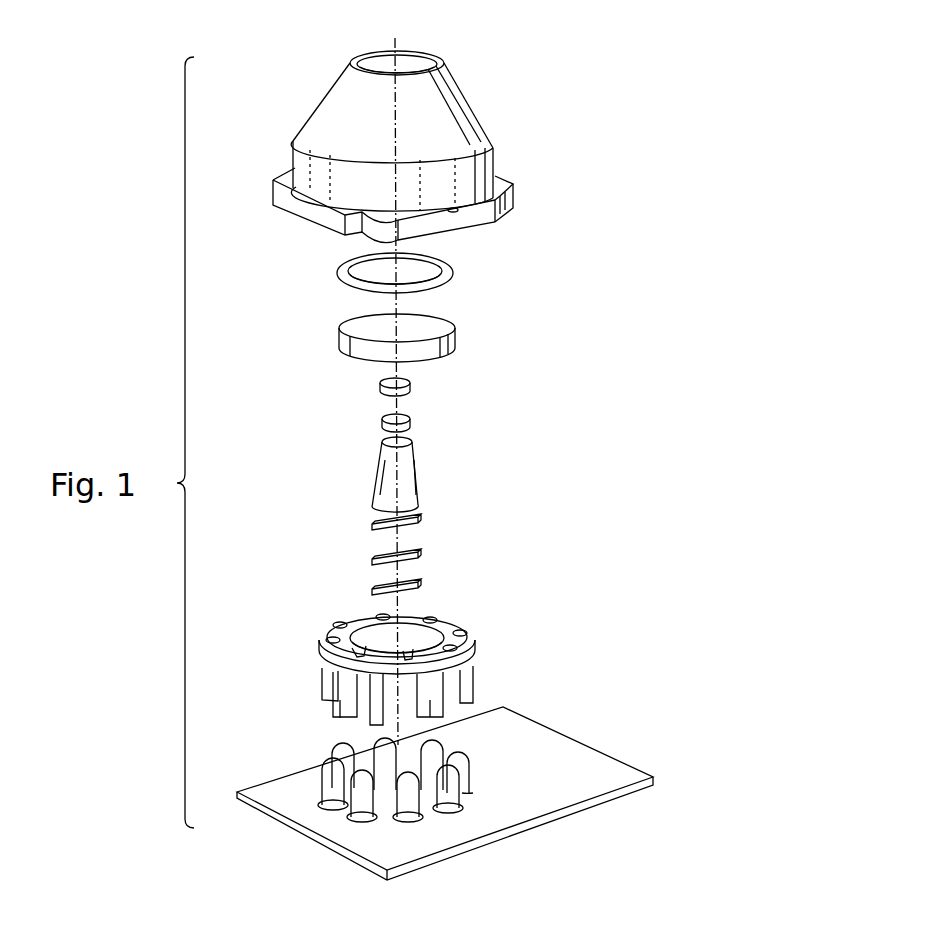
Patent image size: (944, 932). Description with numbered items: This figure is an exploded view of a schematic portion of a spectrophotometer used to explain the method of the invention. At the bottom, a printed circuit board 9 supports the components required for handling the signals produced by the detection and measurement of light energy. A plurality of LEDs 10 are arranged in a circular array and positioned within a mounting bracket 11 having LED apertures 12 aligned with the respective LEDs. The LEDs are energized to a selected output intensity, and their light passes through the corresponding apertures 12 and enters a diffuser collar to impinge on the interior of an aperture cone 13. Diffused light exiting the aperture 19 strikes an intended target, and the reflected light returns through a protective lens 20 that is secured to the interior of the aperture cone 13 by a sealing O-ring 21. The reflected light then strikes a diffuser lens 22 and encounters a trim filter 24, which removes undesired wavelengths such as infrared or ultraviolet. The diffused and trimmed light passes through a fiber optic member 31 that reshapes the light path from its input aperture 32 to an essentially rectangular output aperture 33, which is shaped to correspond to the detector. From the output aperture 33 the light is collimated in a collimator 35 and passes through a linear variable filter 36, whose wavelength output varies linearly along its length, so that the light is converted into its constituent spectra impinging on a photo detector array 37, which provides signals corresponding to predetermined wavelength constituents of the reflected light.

The printed circuit board 9 is at (580, 805).
The LEDs 10 is at (473, 783).
The mounting bracket 11 is at (448, 669).
The LED apertures 12 is at (467, 637).
The aperture cone 13 is at (425, 147).
The aperture 19 is at (444, 60).
The protective lens 20 is at (453, 342).
The sealing O-ring 21 is at (453, 277).
The diffuser lens 22 is at (410, 387).
The trim filter 24 is at (410, 420).
The fiber optic member 31 is at (438, 483).
The input aperture 32 is at (378, 441).
The output aperture 33 is at (373, 515).
The collimator 35 is at (419, 527).
The linear variable filter 36 is at (419, 558).
The photo detector array 37 is at (419, 587).